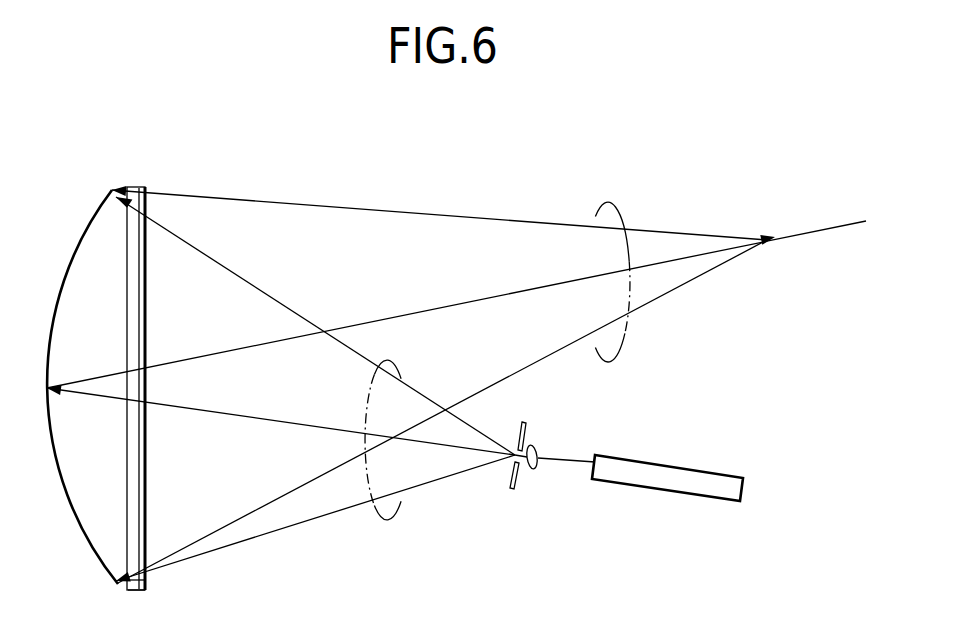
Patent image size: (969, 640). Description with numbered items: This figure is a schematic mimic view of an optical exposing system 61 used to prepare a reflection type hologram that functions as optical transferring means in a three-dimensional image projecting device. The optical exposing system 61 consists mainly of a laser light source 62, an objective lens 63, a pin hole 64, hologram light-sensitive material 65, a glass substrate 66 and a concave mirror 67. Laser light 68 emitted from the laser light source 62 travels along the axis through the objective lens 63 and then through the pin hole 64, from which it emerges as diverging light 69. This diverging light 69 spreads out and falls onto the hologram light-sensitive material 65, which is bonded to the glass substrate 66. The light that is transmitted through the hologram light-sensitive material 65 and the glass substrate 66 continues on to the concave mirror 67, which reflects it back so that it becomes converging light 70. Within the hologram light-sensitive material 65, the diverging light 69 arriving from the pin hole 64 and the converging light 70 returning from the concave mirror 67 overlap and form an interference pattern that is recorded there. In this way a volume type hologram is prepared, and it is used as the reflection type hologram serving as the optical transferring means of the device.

The optical exposing system 61 is at (557, 132).
The laser light source 62 is at (700, 475).
The objective lens 63 is at (537, 449).
The pin hole 64 is at (515, 489).
The hologram light-sensitive material 65 is at (147, 582).
The glass substrate 66 is at (133, 186).
The concave mirror 67 is at (80, 227).
The laser light 68 is at (566, 465).
The diverging light 69 is at (390, 513).
The converging light 70 is at (600, 203).